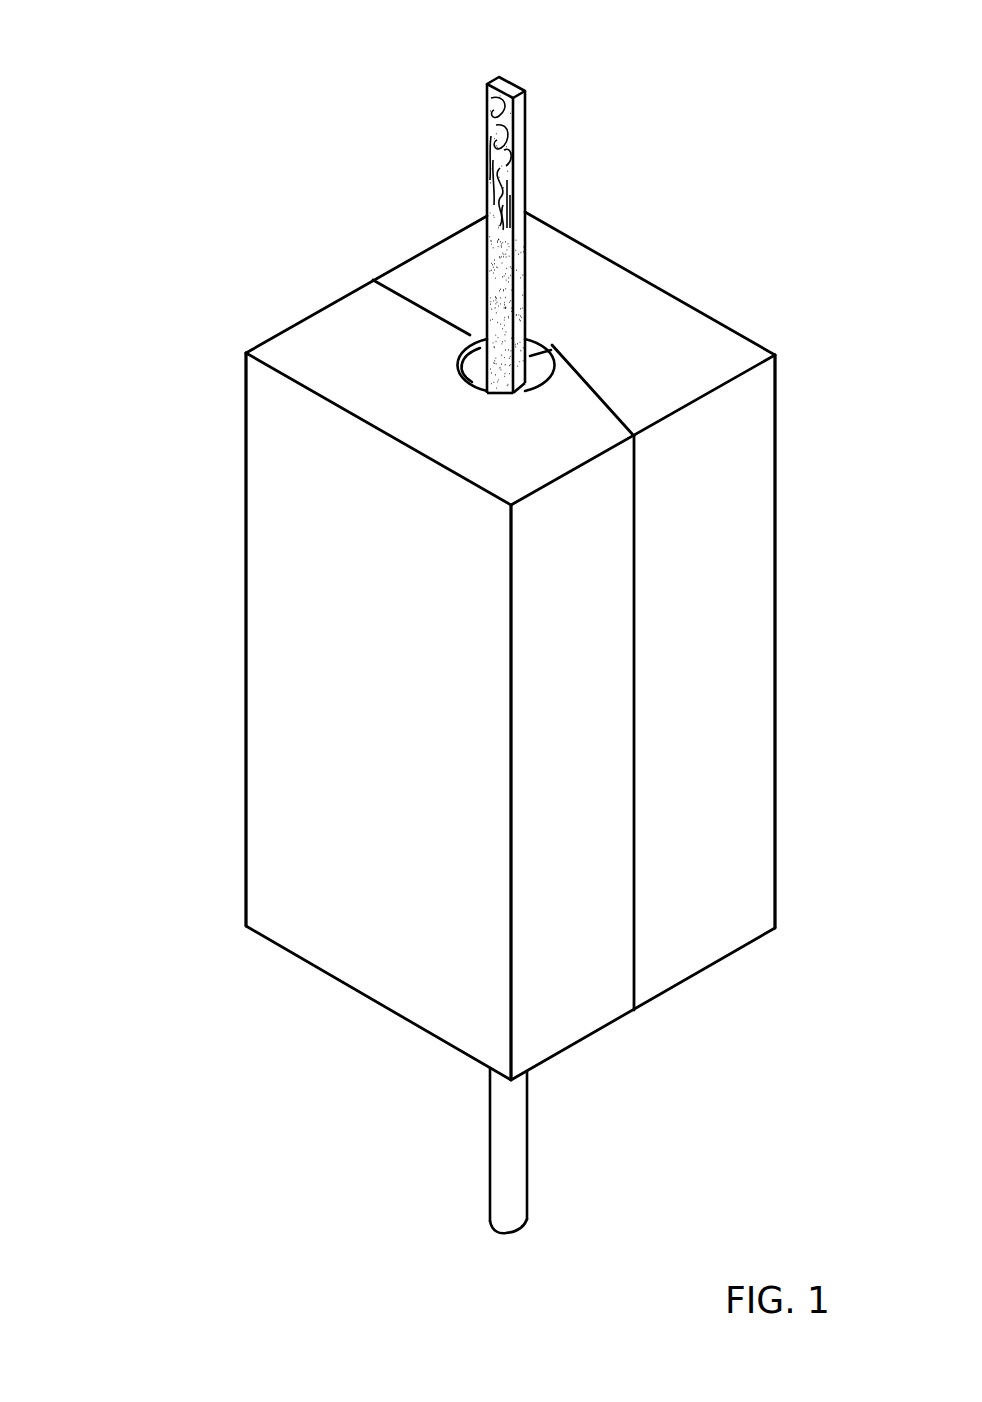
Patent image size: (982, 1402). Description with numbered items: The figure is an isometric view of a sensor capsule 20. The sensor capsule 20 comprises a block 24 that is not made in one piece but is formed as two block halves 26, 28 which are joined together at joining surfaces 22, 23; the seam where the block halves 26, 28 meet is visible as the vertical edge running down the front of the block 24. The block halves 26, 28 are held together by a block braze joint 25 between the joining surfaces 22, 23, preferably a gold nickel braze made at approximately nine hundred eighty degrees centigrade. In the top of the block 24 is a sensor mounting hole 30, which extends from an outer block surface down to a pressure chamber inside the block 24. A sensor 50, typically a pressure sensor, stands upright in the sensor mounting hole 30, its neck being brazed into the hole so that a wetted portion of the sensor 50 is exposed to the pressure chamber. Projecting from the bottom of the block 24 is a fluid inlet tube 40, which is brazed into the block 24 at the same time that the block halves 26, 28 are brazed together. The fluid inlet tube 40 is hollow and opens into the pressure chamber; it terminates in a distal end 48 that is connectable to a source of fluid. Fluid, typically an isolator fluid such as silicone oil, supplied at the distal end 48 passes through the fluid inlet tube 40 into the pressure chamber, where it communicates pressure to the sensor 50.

The sensor capsule 20 is at (127, 68).
The joining surface 22 is at (560, 646).
The joining surface 23 is at (510, 646).
The block 24 is at (262, 551).
The block braze joint 25 is at (635, 972).
The block half 26 is at (728, 641).
The block half 28 is at (555, 792).
The sensor mounting hole 30 is at (471, 306).
The fluid inlet tube 40 is at (500, 1125).
The distal end 48 is at (505, 1232).
The sensor 50 is at (490, 257).